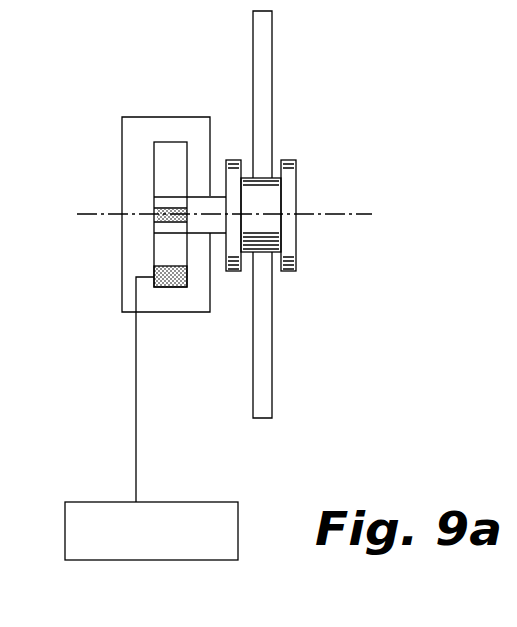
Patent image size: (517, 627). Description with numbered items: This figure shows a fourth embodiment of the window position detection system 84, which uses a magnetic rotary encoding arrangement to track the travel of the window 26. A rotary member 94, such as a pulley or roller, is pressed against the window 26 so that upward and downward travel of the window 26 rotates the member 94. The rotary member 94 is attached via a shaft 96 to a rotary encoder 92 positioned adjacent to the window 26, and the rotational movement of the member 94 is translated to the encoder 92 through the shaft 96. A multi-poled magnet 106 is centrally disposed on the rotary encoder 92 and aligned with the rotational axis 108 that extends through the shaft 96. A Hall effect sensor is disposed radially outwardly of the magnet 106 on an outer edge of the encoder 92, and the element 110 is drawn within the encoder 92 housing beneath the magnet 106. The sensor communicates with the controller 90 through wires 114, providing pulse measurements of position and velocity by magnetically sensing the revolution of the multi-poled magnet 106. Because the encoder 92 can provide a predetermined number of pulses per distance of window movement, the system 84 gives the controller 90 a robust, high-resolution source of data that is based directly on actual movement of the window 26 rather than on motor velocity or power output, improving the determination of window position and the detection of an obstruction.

The window 26 is at (263, 35).
The window position detection system 84 is at (375, 80).
The controller 90 is at (200, 560).
The rotary encoder 92 is at (150, 152).
The rotary member 94 is at (297, 158).
The shaft 96 is at (218, 196).
The multi-poled magnet 106 is at (154, 210).
The rotational axis 108 is at (337, 215).
The coil 110 is at (154, 267).
The wires 114 is at (136, 373).